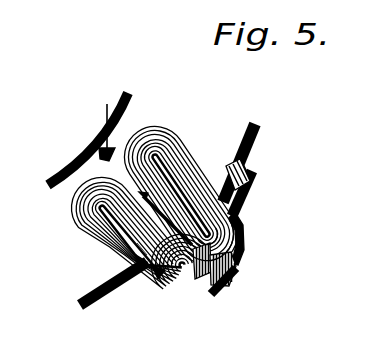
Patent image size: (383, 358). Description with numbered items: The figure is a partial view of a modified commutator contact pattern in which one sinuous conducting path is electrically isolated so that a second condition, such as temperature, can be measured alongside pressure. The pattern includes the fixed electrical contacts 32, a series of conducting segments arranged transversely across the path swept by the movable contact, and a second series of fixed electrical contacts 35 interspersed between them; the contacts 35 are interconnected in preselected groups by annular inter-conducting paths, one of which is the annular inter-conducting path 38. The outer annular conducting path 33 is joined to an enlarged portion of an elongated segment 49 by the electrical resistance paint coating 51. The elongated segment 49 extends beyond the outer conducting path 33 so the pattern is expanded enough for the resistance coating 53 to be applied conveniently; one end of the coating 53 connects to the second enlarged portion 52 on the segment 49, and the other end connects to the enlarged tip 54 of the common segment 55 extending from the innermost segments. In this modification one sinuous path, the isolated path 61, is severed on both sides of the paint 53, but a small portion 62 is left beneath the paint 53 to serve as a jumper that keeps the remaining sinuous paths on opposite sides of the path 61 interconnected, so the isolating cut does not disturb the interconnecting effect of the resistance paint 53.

The fixed electrical contacts 32 is at (164, 184).
The outer annular conducting path 33 is at (262, 131).
The second series of fixed electrical contacts 35 is at (107, 108).
The annular inter-conducting path 38 is at (66, 163).
The elongated segment 49 is at (137, 243).
The electrical resistance paint coating 51 is at (250, 180).
The second enlarged portion 52 is at (214, 291).
The resistance coating 53 is at (234, 272).
The enlarged tip 54 is at (192, 253).
The common segment 55 is at (166, 222).
The isolated sinuous path 61 is at (212, 231).
The small portion 62 is at (210, 239).